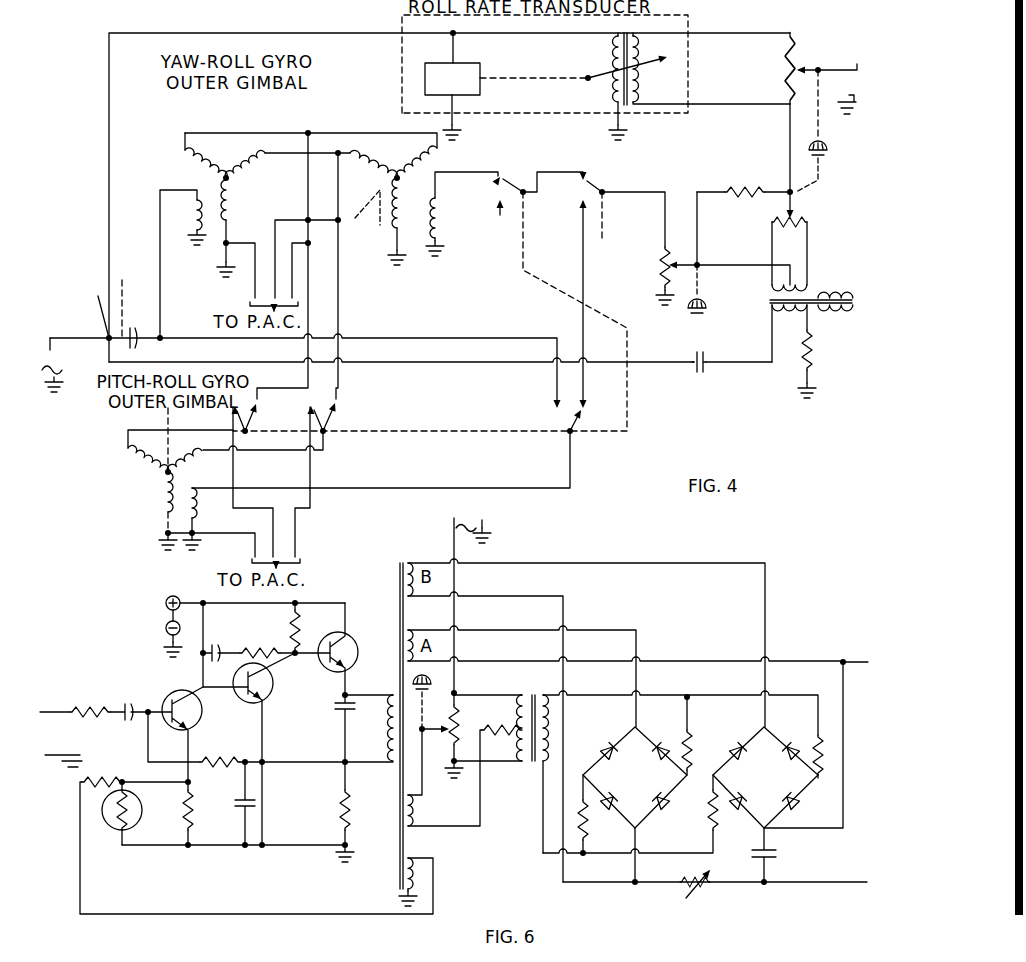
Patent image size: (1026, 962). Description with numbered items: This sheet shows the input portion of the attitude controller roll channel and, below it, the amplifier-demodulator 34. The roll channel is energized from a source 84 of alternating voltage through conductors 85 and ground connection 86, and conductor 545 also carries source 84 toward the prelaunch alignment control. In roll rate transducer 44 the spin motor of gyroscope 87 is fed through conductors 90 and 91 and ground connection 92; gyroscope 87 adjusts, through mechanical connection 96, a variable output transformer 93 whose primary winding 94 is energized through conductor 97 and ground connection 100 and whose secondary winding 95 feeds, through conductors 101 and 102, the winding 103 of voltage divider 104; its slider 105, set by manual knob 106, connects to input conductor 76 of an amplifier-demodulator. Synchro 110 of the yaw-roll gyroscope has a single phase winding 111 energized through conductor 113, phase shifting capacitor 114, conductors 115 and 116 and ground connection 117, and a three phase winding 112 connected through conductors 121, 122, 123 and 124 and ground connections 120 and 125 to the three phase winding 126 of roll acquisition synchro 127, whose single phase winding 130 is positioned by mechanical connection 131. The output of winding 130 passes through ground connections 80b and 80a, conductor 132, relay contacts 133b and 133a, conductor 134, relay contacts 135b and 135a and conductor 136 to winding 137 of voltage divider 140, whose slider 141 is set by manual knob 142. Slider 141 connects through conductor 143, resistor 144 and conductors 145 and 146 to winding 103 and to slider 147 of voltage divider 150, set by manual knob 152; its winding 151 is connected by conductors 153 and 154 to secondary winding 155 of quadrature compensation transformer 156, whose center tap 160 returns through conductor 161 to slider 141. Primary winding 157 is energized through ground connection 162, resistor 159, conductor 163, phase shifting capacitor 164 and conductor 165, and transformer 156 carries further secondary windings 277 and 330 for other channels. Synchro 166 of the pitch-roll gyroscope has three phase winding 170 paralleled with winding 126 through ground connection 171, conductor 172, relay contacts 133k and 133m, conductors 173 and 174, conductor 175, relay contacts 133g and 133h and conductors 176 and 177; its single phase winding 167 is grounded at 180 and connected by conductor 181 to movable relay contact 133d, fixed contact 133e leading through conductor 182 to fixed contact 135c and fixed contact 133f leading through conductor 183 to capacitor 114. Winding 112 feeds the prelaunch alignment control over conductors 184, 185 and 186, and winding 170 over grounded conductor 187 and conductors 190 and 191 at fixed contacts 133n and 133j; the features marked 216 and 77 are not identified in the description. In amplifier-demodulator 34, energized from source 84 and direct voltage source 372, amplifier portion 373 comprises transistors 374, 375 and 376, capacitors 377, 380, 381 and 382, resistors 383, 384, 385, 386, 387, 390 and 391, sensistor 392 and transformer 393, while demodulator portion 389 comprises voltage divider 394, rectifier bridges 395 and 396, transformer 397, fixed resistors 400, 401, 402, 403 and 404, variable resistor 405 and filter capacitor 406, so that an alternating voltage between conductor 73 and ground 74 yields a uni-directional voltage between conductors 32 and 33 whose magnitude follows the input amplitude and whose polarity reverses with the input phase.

In FIG. 4, the conductor 90 is at (318, 34).
In FIG. 4, the roll rate transducer 44 is at (692, 25).
In FIG. 4, the conductor 91 is at (455, 52).
In FIG. 4, the gyroscope 87 is at (480, 73).
In FIG. 4, the mechanical connection 96 is at (530, 79).
In FIG. 4, the ground connection 92 is at (459, 110).
In FIG. 4, the conductor 97 is at (523, 34).
In FIG. 4, the variable output transformer 93 is at (624, 32).
In FIG. 4, the primary winding 94 is at (616, 55).
In FIG. 4, the secondary winding 95 is at (637, 55).
In FIG. 4, the ground connection 100 is at (619, 129).
In FIG. 4, the conductor 101 is at (767, 34).
In FIG. 4, the voltage divider 104 is at (802, 44).
In FIG. 4, the winding 103 is at (782, 52).
In FIG. 4, the slider 105 is at (819, 70).
In FIG. 4, the conductor 102 is at (736, 104).
In FIG. 4, the input conductor 76 is at (838, 88).
In FIG. 4, the ground 77 is at (852, 112).
In FIG. 4, the manual knob 106 is at (828, 150).
In FIG. 4, the conductor 146 is at (786, 132).
In FIG. 4, the manual knob 152 is at (805, 175).
In FIG. 4, the conductor 145 is at (786, 184).
In FIG. 4, the resistor 144 is at (743, 180).
In FIG. 4, the conductor 143 is at (693, 193).
In FIG. 4, the slider 147 is at (792, 220).
In FIG. 4, the voltage divider 150 is at (808, 216).
In FIG. 4, the conductor 153 is at (772, 233).
In FIG. 4, the winding 151 is at (789, 253).
In FIG. 4, the conductor 154 is at (809, 248).
In FIG. 4, the conductor 161 is at (760, 264).
In FIG. 4, the center tap 160 is at (787, 276).
In FIG. 4, the secondary winding 155 is at (771, 297).
In FIG. 4, the quadrature compensation transformer 156 is at (768, 308).
In FIG. 4, the primary winding 157 is at (789, 333).
In FIG. 4, the secondary winding 277 is at (836, 283).
In FIG. 4, the secondary winding 330 is at (835, 321).
In FIG. 4, the resistor 159 is at (807, 360).
In FIG. 4, the ground connection 162 is at (810, 385).
In FIG. 4, the conductor 165 is at (742, 392).
In FIG. 4, the phase shifting capacitor 164 is at (696, 372).
In FIG. 4, the conductor 163 is at (420, 365).
In FIG. 4, the conductor 183 is at (470, 341).
In FIG. 4, the conductors 85 is at (65, 336).
In FIG. 6, the conductors 85 is at (452, 539).
In FIG. 4, the source of alternating voltage 84 is at (53, 360).
In FIG. 6, the source of alternating voltage 84 is at (467, 519).
In FIG. 4, the ground connection 86 is at (66, 374).
In FIG. 6, the ground connection 86 is at (490, 528).
In FIG. 4, the conductor 545 is at (107, 342).
In FIG. 4, the lead 216 is at (95, 294).
In FIG. 4, the conductor 113 is at (122, 347).
In FIG. 4, the conductor 115 is at (158, 341).
In FIG. 4, the phase shifting capacitor 114 is at (133, 327).
In FIG. 4, the conductor 182 is at (581, 328).
In FIG. 4, the conductor 181 is at (488, 487).
In FIG. 4, the synchro 110 is at (186, 172).
In FIG. 4, the conductor 121 is at (279, 132).
In FIG. 4, the conductor 122 is at (345, 132).
In FIG. 4, the three phase winding 112 is at (228, 179).
In FIG. 4, the conductor 123 is at (300, 157).
In FIG. 4, the conductor 116 is at (158, 202).
In FIG. 4, the single phase winding 111 is at (192, 212).
In FIG. 4, the ground connection 117 is at (202, 232).
In FIG. 4, the ground connection 120 is at (235, 264).
In FIG. 4, the conductor 184 is at (236, 246).
In FIG. 4, the conductor 185 is at (295, 256).
In FIG. 4, the conductor 186 is at (303, 222).
In FIG. 4, the conductor 174 is at (305, 196).
In FIG. 4, the conductor 173 is at (306, 380).
In FIG. 4, the conductor 177 is at (338, 171).
In FIG. 4, the conductor 176 is at (340, 386).
In FIG. 4, the conductor 124 is at (368, 168).
In FIG. 4, the three phase winding 126 is at (397, 172).
In FIG. 4, the mechanical connection 131 is at (363, 216).
In FIG. 4, the ground connection 125 is at (395, 254).
In FIG. 4, the roll acquisition synchro 127 is at (450, 161).
In FIG. 4, the conductor 132 is at (490, 170).
In FIG. 4, the single phase winding 130 is at (437, 224).
In FIG. 4, the ground connection 80b is at (440, 241).
In FIG. 4, the relay contact 133b is at (494, 181).
In FIG. 4, the relay contact 133a is at (430, 310).
In FIG. 4, the conductor 134 is at (538, 185).
In FIG. 4, the relay contact 135b is at (588, 171).
In FIG. 4, the relay contact 135a is at (606, 190).
In FIG. 4, the fixed relay contact 135c is at (582, 205).
In FIG. 4, the conductor 136 is at (664, 189).
In FIG. 4, the voltage divider 140 is at (675, 238).
In FIG. 4, the winding 137 is at (660, 265).
In FIG. 4, the ground connection 80a is at (662, 292).
In FIG. 4, the slider 141 is at (697, 265).
In FIG. 4, the manual knob 142 is at (697, 313).
In FIG. 4, the fixed relay contact 133f is at (553, 403).
In FIG. 4, the fixed relay contact 133e is at (586, 403).
In FIG. 4, the movable relay contact 133d is at (580, 424).
In FIG. 4, the fixed relay contact 133n is at (228, 412).
In FIG. 4, the relay contact 133k is at (261, 430).
In FIG. 4, the relay contact 133m is at (258, 405).
In FIG. 4, the fixed relay contact 133j is at (328, 407).
In FIG. 4, the relay contact 133h is at (318, 408).
In FIG. 4, the relay contact 133g is at (328, 426).
In FIG. 4, the conductor 172 is at (205, 432).
In FIG. 4, the synchro 166 is at (122, 477).
In FIG. 4, the three phase winding 170 is at (187, 460).
In FIG. 4, the conductor 175 is at (281, 452).
In FIG. 4, the conductor 190 is at (234, 474).
In FIG. 4, the conductor 191 is at (311, 474).
In FIG. 4, the ground connection 171 is at (165, 534).
In FIG. 4, the single phase winding 167 is at (194, 504).
In FIG. 4, the ground connection 180 is at (196, 542).
In FIG. 4, the grounded conductor 187 is at (214, 540).
In FIG. 6, the amplifier-demodulator 34 is at (344, 587).
In FIG. 6, the transformer 393 is at (390, 800).
In FIG. 6, the source of direct voltage 372 is at (164, 628).
In FIG. 6, the resistor 387 is at (300, 640).
In FIG. 6, the capacitor 381 is at (212, 646).
In FIG. 6, the resistor 386 is at (285, 644).
In FIG. 6, the transistor 376 is at (358, 644).
In FIG. 6, the transistor 375 is at (275, 682).
In FIG. 6, the transistor 374 is at (202, 710).
In FIG. 6, the amplifier portion 373 is at (165, 679).
In FIG. 6, the capacitor 377 is at (124, 711).
In FIG. 6, the resistor 383 is at (90, 702).
In FIG. 6, the conductor 73 is at (41, 715).
In FIG. 6, the ground 74 is at (51, 756).
In FIG. 6, the capacitor 382 is at (340, 713).
In FIG. 6, the resistor 391 is at (223, 761).
In FIG. 6, the resistor 384 is at (89, 781).
In FIG. 6, the resistor 385 is at (184, 810).
In FIG. 6, the capacitor 380 is at (244, 801).
In FIG. 6, the resistor 390 is at (342, 801).
In FIG. 6, the sensistor 392 is at (118, 831).
In FIG. 6, the voltage divider 394 is at (465, 721).
In FIG. 6, the fixed resistor 400 is at (501, 728).
In FIG. 6, the transformer 397 is at (538, 768).
In FIG. 6, the demodulator portion 389 is at (503, 835).
In FIG. 6, the rectifier bridge 395 is at (620, 785).
In FIG. 6, the rectifier bridge 396 is at (749, 785).
In FIG. 6, the fixed resistor 401 is at (602, 814).
In FIG. 6, the fixed resistor 402 is at (693, 732).
In FIG. 6, the fixed resistor 403 is at (712, 815).
In FIG. 6, the fixed resistor 404 is at (817, 732).
In FIG. 6, the filter capacitor 406 is at (777, 854).
In FIG. 6, the variable resistor 405 is at (703, 891).
In FIG. 6, the conductor 32 is at (863, 662).
In FIG. 6, the conductor 33 is at (800, 882).